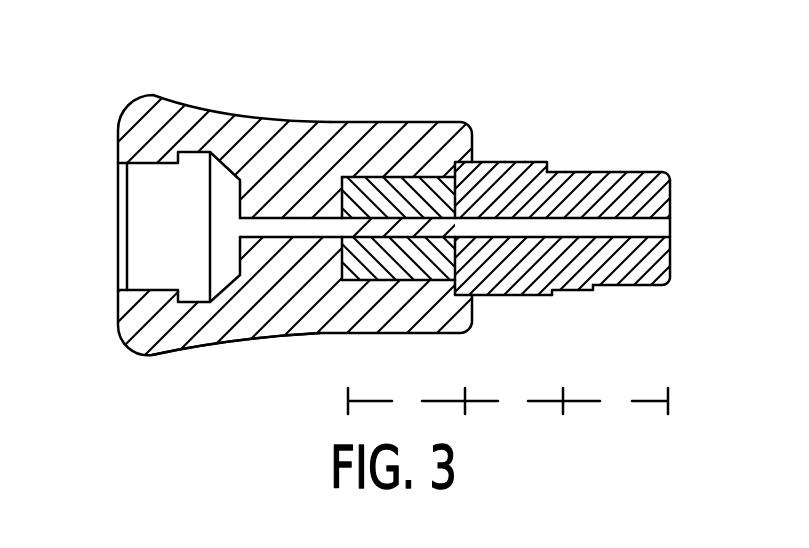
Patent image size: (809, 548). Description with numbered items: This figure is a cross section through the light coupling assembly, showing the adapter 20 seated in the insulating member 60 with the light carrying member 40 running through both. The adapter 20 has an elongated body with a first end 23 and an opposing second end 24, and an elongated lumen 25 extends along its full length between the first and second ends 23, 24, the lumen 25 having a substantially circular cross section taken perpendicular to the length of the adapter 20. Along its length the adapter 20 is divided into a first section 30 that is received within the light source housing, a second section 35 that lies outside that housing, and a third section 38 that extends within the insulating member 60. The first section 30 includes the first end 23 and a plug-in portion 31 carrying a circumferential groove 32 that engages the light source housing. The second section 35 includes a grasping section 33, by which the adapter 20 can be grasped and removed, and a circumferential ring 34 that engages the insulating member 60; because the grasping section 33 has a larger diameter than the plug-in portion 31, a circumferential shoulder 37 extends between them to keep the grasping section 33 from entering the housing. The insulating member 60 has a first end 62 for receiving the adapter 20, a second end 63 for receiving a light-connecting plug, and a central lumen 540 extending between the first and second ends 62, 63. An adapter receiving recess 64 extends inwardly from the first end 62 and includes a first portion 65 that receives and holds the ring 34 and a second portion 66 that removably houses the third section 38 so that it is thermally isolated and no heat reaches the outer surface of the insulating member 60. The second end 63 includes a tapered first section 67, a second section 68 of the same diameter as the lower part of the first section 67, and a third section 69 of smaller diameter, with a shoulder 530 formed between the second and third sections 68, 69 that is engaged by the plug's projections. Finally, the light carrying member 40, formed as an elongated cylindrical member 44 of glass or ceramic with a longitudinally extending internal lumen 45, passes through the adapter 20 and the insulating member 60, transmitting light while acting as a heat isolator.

The adapter 20 is at (637, 172).
The first end 23 is at (670, 174).
The second end 24 is at (350, 174).
The lumen 25 is at (505, 162).
The first section 30 is at (615, 401).
The plug-in portion 31 is at (572, 172).
The circumferential groove 32 is at (594, 172).
The grasping section 33 is at (522, 162).
The circumferential ring 34 is at (481, 162).
The second section 35 is at (514, 401).
The circumferential shoulder 37 is at (549, 163).
The third section 38 is at (398, 281).
The light carrying member 40 is at (630, 228).
The elongated cylindrical member 44 is at (658, 232).
The internal lumen 45 is at (256, 228).
The insulating member 60 is at (438, 122).
The first end 62 is at (452, 122).
The second end 63 is at (106, 122).
The adapter receiving recess 64 is at (329, 258).
The first portion 65 is at (472, 162).
The second portion 66 is at (379, 162).
The first section 67 is at (210, 330).
The second section 68 is at (176, 340).
The third section 69 is at (127, 291).
The shoulder 530 is at (184, 170).
The central lumen 540 is at (283, 216).